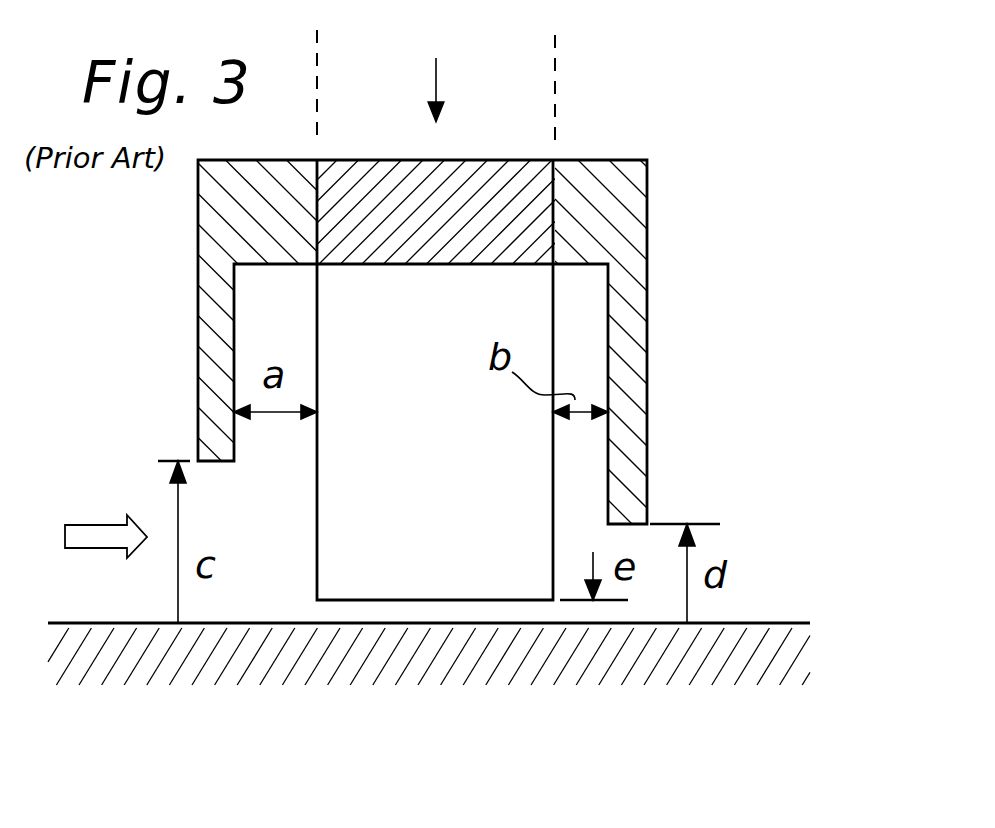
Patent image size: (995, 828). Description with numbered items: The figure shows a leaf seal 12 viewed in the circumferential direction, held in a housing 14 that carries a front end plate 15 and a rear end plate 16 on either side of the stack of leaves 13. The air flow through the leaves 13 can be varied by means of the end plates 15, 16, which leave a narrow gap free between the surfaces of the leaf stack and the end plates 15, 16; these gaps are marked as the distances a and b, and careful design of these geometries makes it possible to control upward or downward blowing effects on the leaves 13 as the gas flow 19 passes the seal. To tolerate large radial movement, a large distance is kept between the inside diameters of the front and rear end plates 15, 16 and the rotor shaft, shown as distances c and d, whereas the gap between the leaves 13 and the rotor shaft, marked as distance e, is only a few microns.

The leaf seal 12 is at (436, 74).
The leaf 13 is at (457, 466).
The housing 14 is at (607, 178).
The end plate 15 is at (198, 365).
The end plate 16 is at (633, 357).
The gas flow 19 is at (108, 530).